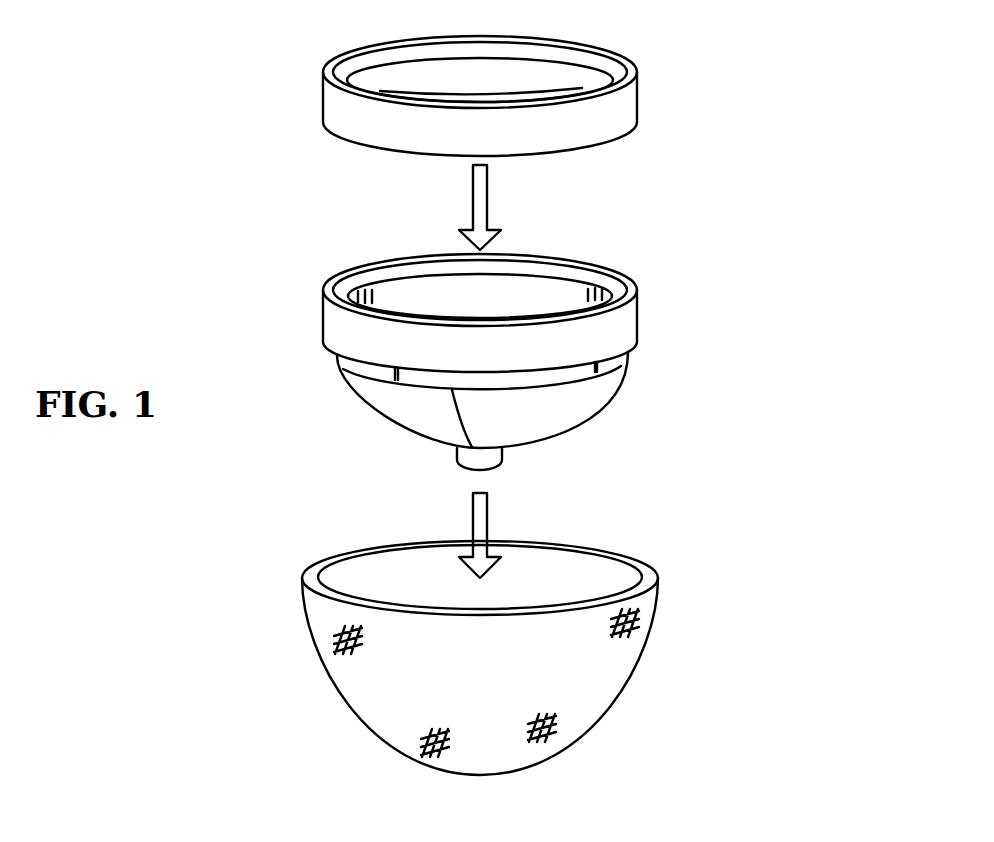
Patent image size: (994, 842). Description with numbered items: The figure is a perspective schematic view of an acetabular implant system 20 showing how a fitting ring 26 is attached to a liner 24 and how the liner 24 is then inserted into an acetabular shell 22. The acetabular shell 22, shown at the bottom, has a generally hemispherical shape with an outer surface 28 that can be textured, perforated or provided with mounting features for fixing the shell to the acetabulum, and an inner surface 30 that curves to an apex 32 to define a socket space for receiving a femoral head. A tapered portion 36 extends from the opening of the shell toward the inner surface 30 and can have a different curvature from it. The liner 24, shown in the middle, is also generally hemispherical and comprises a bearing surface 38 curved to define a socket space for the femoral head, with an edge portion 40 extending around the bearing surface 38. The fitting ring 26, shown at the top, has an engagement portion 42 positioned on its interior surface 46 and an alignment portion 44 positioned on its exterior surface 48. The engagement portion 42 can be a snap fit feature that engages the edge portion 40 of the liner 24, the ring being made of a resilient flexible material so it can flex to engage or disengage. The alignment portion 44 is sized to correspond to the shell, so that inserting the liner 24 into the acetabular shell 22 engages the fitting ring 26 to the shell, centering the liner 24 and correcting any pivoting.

The acetabular implant system 20 is at (761, 38).
The acetabular shell 22 is at (579, 740).
The liner 24 is at (579, 431).
The fitting ring 26 is at (624, 52).
The outer surface 28 is at (368, 700).
The inner surface 30 is at (447, 594).
The apex 32 is at (480, 471).
The tapered portion 36 is at (385, 292).
The bearing surface 38 is at (511, 306).
The edge portion 40 is at (335, 354).
The engagement portion 42 is at (537, 62).
The alignment portion 44 is at (629, 140).
The interior surface 46 is at (372, 64).
The exterior surface 48 is at (495, 147).